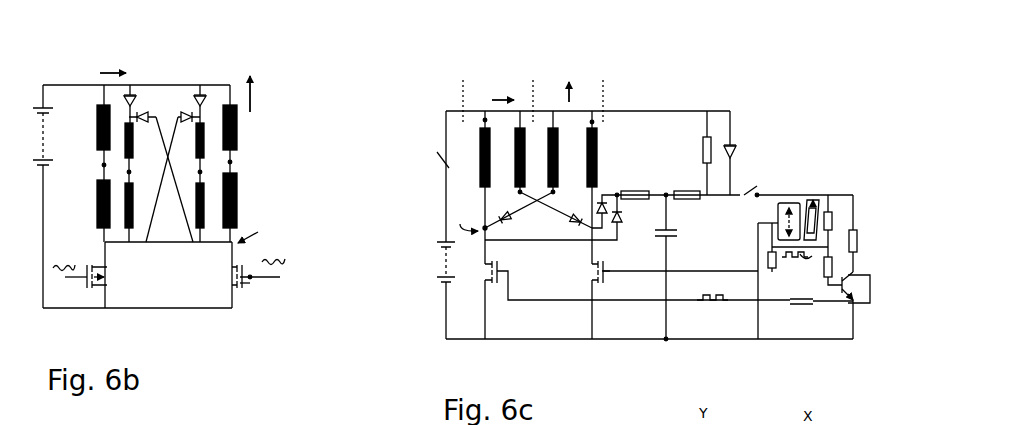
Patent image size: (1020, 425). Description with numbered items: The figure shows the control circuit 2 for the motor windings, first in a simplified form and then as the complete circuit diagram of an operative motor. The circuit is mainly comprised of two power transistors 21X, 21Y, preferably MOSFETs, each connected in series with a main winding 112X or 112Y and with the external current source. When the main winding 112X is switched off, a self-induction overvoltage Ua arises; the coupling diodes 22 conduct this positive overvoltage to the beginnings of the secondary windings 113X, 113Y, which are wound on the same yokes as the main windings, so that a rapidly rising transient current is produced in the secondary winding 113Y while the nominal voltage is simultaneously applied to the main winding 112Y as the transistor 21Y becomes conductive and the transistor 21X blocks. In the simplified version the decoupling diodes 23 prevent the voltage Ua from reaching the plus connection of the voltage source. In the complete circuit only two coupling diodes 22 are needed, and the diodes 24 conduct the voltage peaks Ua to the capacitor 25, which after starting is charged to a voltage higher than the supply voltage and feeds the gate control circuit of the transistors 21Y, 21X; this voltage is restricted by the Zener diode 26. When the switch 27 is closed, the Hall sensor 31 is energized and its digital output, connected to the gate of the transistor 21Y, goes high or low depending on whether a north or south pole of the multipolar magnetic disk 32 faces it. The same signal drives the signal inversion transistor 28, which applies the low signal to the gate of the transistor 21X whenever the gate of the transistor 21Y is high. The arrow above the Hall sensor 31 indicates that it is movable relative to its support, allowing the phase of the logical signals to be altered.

In FIG. 6B, the control circuit 2 is at (278, 56).
In FIG. 6C, the control circuit 2 is at (416, 83).
In FIG. 6B, the power transistor 21X is at (122, 270).
In FIG. 6C, the power transistor 21X is at (514, 268).
In FIG. 6B, the power transistor 21Y is at (262, 284).
In FIG. 6C, the power transistor 21Y is at (618, 283).
In FIG. 6B, the coupling diodes 22 is at (185, 106).
In FIG. 6C, the coupling diodes 22 is at (568, 228).
In FIG. 6B, the decoupling diodes 23 is at (184, 84).
In FIG. 6C, the diodes 24 is at (623, 224).
In FIG. 6C, the capacitor 25 is at (678, 222).
In FIG. 6C, the Zener diode 26 is at (742, 137).
In FIG. 6C, the switch 27 is at (786, 206).
In FIG. 6C, the signal inversion transistor 28 is at (836, 294).
In FIG. 6C, the Hall sensor 31 is at (788, 192).
In FIG. 6C, the multipolar magnetic disk 32 is at (818, 196).
In FIG. 6B, the main winding 112X is at (92, 134).
In FIG. 6C, the main winding 112X is at (470, 162).
In FIG. 6B, the main winding 112Y is at (241, 126).
In FIG. 6C, the main winding 112Y is at (604, 136).
In FIG. 6C, the secondary winding 113X is at (524, 150).
In FIG. 6B, the secondary winding 113Y is at (165, 230).
In FIG. 6C, the secondary winding 113Y is at (561, 150).